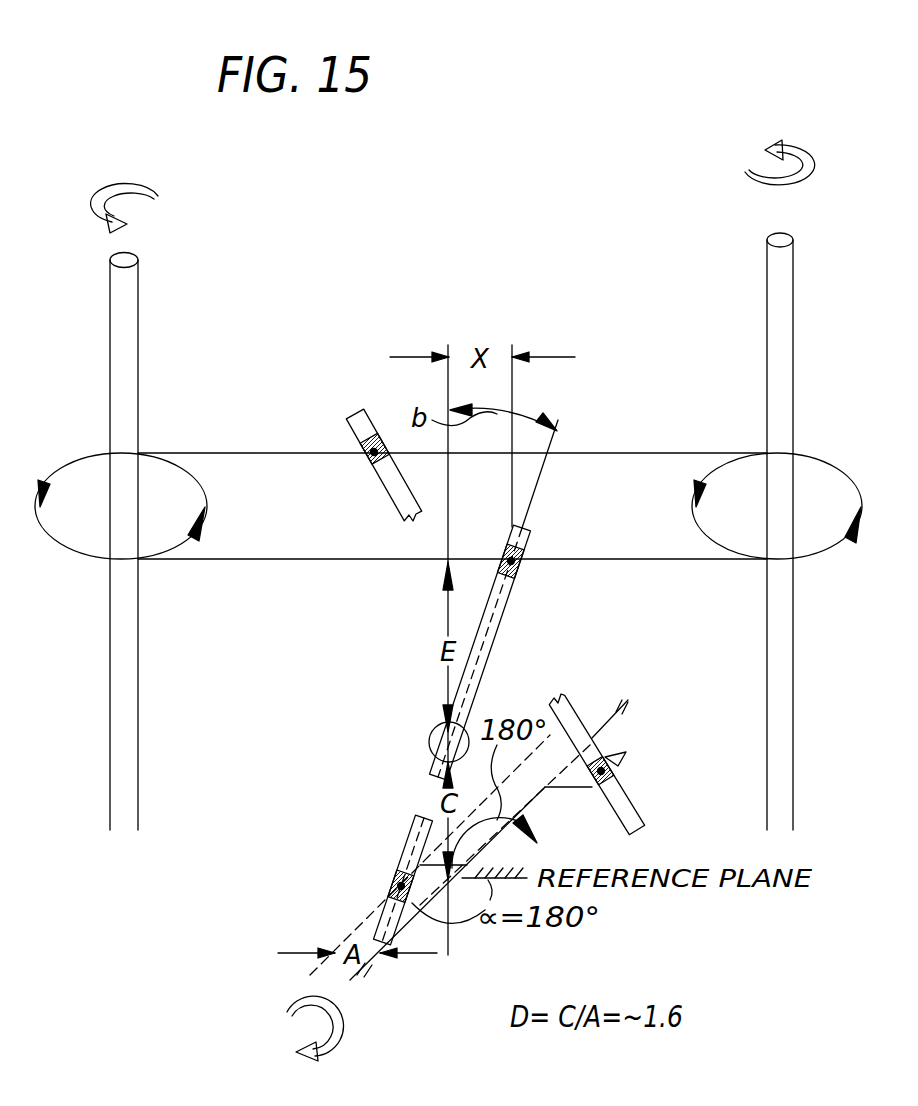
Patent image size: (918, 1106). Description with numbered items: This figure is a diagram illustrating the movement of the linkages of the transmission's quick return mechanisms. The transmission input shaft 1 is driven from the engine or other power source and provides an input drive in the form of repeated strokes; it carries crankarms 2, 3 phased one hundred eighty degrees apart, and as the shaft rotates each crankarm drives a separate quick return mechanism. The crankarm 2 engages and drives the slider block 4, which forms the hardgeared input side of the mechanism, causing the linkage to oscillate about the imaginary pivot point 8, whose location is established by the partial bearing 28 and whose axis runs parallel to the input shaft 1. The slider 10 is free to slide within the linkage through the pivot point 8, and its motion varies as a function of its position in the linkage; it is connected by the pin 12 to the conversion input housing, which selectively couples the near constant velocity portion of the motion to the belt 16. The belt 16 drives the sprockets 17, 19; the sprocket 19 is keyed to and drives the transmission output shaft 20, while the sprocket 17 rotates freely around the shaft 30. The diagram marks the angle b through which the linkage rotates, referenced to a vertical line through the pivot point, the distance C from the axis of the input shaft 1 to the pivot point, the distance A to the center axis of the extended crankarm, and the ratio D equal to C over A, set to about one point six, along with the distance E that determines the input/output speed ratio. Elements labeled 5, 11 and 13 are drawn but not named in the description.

The transmission input shaft 1 is at (373, 962).
The crankarm 2 is at (393, 893).
The crankarm 3 is at (626, 757).
The slider block 4 is at (395, 878).
The side blade pivot section 5 is at (600, 788).
The pivot point 8 is at (438, 730).
The slider 10 is at (520, 553).
The first tilted blade 11 is at (371, 468).
The pin 12 is at (518, 570).
The first blade cutting section 13 is at (370, 456).
The belt 16 is at (662, 560).
The sprocket 17 is at (66, 548).
The sprocket 19 is at (838, 545).
The transmission output shaft 20 is at (767, 320).
The partial bearing 28 is at (430, 757).
The shaft 30 is at (140, 318).